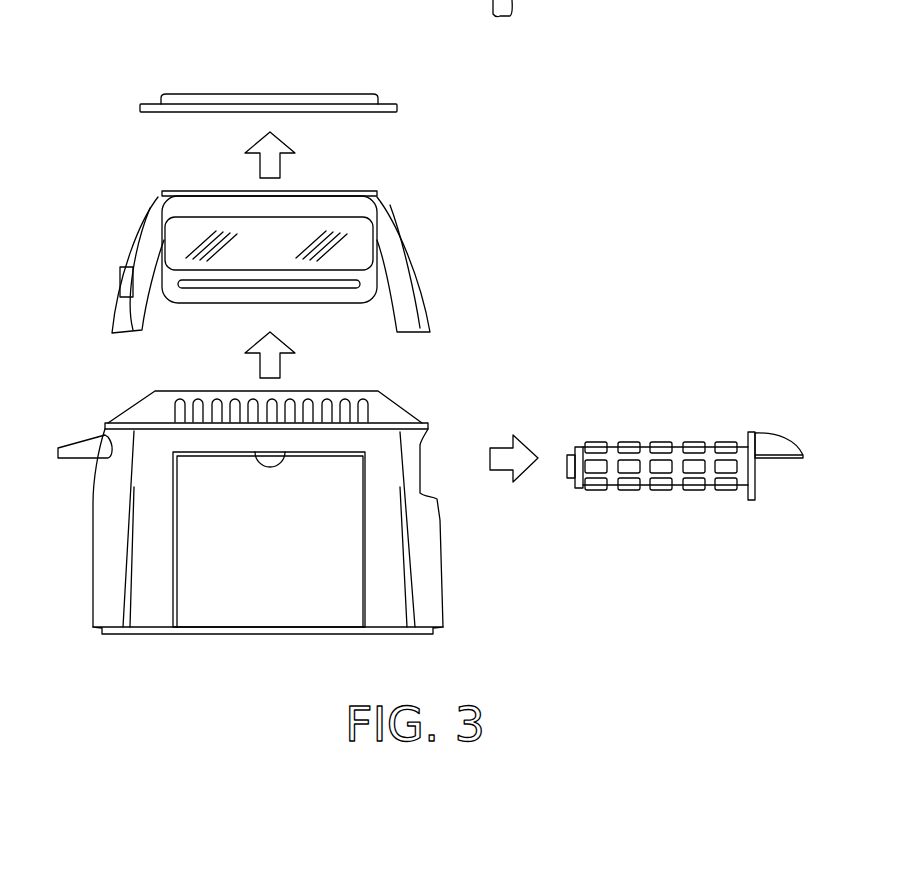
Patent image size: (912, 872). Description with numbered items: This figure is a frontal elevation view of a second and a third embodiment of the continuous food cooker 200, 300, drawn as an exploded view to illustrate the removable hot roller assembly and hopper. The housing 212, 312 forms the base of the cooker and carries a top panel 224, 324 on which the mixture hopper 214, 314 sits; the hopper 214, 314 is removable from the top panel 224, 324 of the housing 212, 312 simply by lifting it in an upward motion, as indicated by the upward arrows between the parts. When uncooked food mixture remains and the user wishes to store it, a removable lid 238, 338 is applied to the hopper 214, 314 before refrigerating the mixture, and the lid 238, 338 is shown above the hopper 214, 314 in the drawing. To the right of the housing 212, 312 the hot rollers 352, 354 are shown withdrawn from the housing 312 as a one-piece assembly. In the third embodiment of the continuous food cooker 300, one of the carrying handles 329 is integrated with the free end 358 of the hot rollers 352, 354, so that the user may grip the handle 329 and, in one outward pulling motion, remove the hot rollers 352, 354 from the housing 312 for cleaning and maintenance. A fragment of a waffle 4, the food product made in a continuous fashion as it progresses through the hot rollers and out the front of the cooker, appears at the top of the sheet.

The continuous food cooker 200 is at (420, 317).
The continuous food cooker 300 is at (190, 78).
The removable lid 238 is at (281, 82).
The removable lid 338 is at (293, 98).
The mixture hopper 214 is at (329, 262).
The mixture hopper 314 is at (410, 252).
The top panel 224 is at (327, 399).
The top panel 324 is at (395, 412).
The housing 212 is at (322, 501).
The housing 312 is at (425, 600).
The carrying handle 329 is at (778, 452).
The hot roller 352 is at (645, 495).
The hot roller 354 is at (660, 492).
The free end 358 is at (742, 485).
The waffle 4 is at (551, 0).